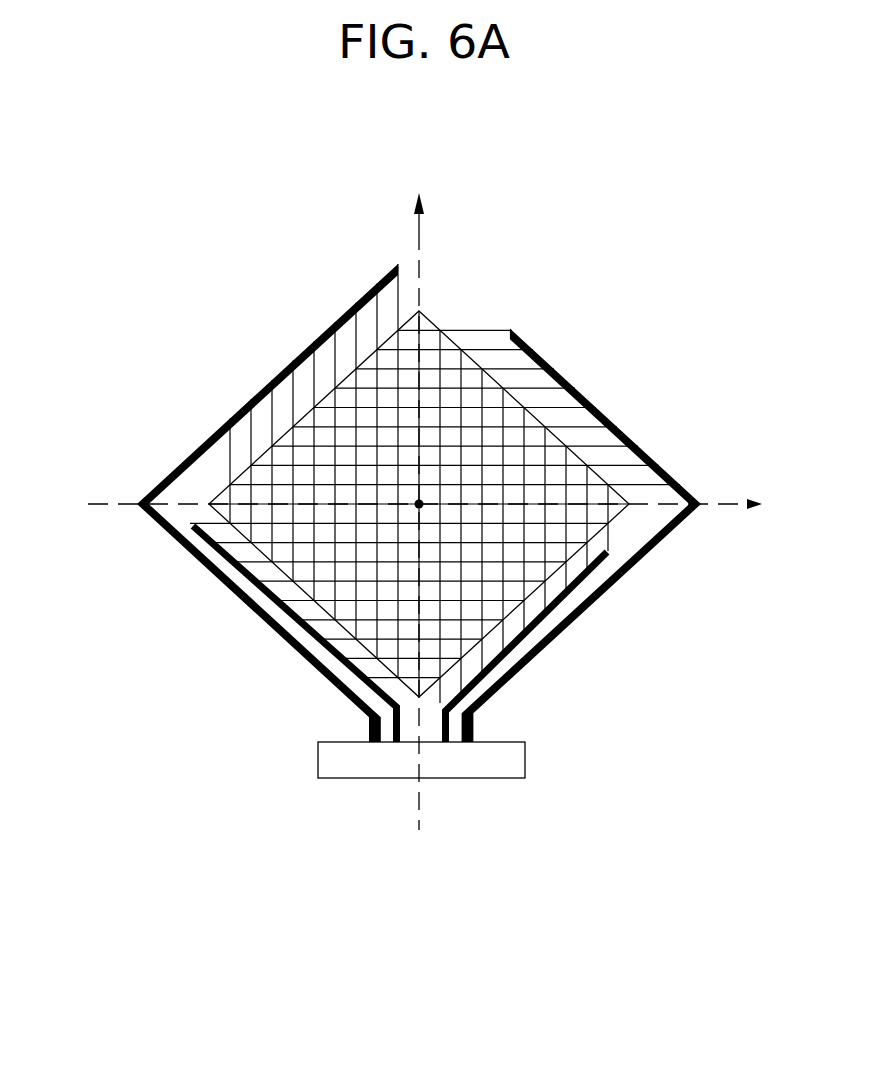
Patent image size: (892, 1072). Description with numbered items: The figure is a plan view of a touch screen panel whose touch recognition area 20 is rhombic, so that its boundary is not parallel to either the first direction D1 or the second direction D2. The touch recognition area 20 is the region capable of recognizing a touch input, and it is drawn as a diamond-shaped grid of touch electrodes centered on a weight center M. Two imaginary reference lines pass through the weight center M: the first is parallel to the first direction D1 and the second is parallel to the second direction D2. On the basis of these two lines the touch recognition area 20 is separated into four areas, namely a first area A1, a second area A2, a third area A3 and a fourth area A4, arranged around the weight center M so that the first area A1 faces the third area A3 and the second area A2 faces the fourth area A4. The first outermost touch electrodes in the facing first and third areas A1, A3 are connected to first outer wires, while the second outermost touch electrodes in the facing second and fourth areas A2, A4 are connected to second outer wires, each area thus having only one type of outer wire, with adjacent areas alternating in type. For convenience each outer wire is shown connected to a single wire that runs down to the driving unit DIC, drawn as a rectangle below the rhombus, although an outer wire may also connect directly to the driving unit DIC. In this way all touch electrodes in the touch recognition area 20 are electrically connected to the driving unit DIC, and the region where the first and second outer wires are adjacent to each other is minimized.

The touch recognition area 20 is at (537, 558).
The driving unit DIC is at (483, 780).
The weight center M is at (420, 492).
The first area A1 is at (355, 447).
The second area A2 is at (477, 447).
The third area A3 is at (477, 560).
The fourth area A4 is at (357, 560).
The first direction D1 is at (417, 499).
The second direction D2 is at (439, 505).